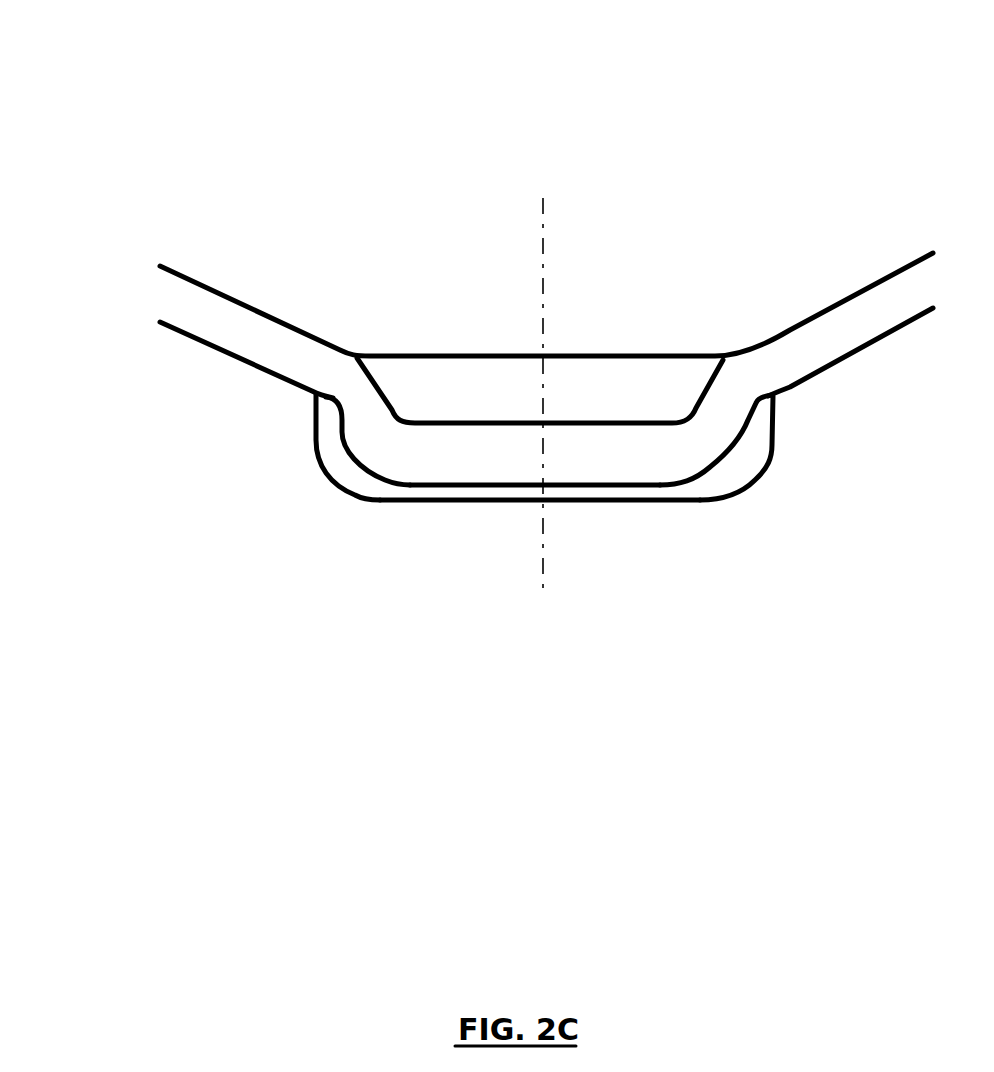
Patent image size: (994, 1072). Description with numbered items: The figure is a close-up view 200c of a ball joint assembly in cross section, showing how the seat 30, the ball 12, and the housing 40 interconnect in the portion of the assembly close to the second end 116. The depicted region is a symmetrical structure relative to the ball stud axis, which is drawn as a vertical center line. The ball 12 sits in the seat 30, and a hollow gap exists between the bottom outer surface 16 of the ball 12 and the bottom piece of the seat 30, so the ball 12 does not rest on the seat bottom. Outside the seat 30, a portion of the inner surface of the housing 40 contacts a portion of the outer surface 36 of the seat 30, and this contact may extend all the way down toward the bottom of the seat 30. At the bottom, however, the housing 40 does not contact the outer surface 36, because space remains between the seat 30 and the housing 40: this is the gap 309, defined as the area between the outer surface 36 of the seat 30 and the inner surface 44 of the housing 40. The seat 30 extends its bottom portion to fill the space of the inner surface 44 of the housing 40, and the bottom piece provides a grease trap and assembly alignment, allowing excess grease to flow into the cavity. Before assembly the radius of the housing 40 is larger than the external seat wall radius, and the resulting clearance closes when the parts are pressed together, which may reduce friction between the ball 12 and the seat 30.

The close-up view 200c is at (233, 68).
The ball 12 is at (680, 259).
The bottom outer surface 16 is at (497, 355).
The seat 30 is at (168, 313).
The outer surface 36 is at (343, 430).
The housing 40 is at (722, 533).
The inner surface 44 is at (362, 497).
The gap 309 is at (562, 493).
The second end 116 is at (374, 648).